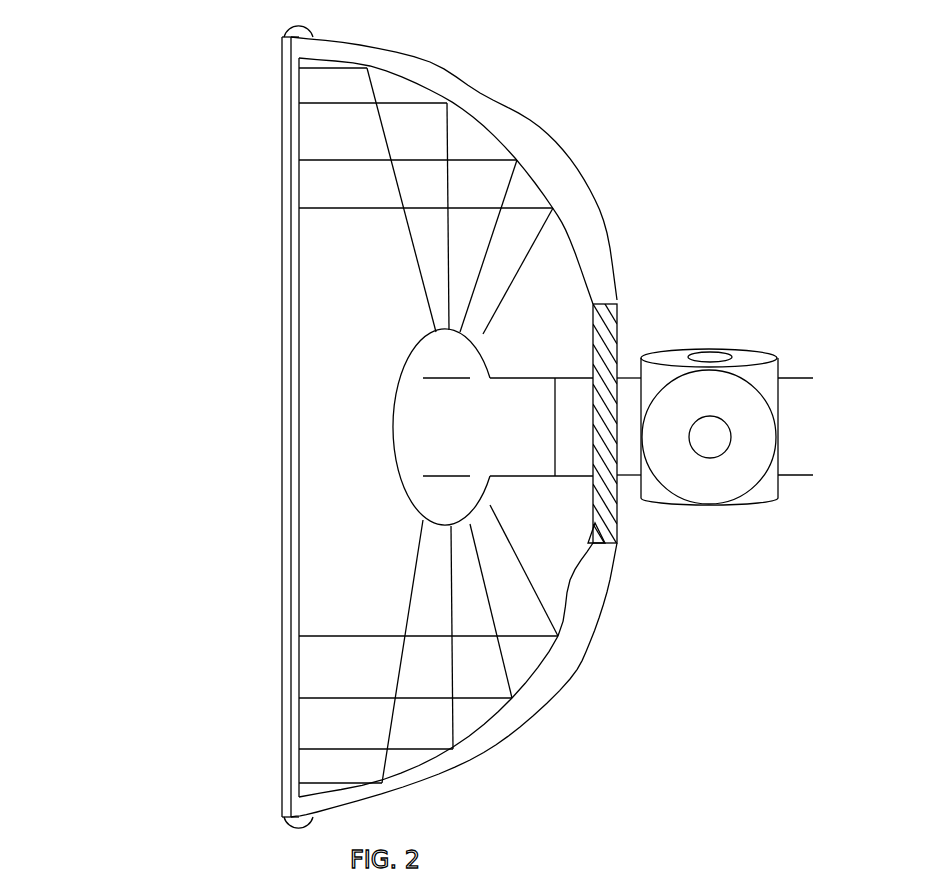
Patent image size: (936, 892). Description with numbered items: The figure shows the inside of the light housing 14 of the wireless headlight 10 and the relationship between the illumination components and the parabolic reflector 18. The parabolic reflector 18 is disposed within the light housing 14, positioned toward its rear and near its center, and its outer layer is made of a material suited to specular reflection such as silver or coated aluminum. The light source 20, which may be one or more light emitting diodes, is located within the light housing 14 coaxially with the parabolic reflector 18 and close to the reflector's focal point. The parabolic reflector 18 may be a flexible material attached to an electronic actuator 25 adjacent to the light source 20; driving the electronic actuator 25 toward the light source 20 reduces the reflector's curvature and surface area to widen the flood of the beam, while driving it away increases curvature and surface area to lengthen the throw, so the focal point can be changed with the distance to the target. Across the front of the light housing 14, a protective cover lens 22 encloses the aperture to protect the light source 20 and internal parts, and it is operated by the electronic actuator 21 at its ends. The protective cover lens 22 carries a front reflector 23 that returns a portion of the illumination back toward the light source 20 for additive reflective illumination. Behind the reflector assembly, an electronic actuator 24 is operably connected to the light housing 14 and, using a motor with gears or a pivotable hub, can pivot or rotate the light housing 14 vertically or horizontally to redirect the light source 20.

The wireless headlight 10 is at (96, 136).
The light housing 14 is at (588, 643).
The parabolic reflector 18 is at (523, 158).
The light source 20 is at (497, 478).
The electronic actuator 21 is at (300, 27).
The protective cover lens 22 is at (282, 632).
The front reflector 23 is at (282, 393).
The electronic actuator 24 is at (755, 428).
The electronic actuator 25 is at (605, 318).